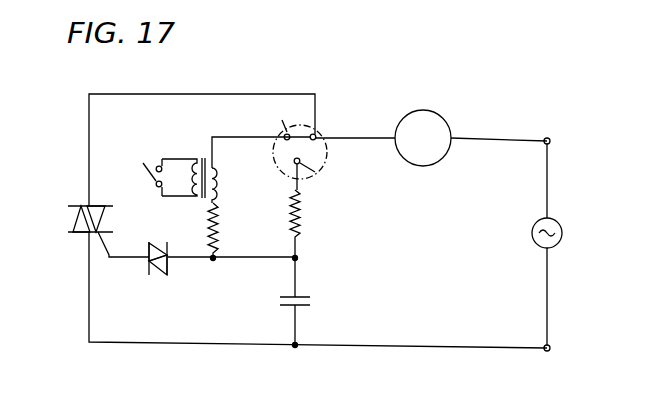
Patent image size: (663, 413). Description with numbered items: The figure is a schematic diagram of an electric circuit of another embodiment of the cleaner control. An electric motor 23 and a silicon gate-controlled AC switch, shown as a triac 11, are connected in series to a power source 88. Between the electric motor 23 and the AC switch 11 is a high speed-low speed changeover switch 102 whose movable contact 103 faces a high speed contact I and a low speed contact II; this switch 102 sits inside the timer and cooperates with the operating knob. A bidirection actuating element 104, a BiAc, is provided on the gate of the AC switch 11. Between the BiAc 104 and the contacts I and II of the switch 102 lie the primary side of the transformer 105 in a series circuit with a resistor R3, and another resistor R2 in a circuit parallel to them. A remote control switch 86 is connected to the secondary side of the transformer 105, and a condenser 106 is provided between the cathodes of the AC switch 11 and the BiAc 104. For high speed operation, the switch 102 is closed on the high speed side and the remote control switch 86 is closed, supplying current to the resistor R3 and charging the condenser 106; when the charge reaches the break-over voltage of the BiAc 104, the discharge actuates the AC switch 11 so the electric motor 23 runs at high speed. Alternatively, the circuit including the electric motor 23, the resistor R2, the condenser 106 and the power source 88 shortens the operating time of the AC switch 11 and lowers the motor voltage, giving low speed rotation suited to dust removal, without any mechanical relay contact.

The triac 11 is at (77, 205).
The remote control switch 86 is at (150, 172).
The transformer 105 is at (200, 157).
The resistor R3 is at (216, 236).
The movable contact 103 is at (307, 132).
The high speed-low speed changeover switch 102 is at (278, 171).
The resistor R2 is at (302, 211).
The bidirection actuating element 104 is at (158, 276).
The condenser 106 is at (309, 301).
The electric motor 23 is at (450, 120).
The power source 88 is at (557, 222).